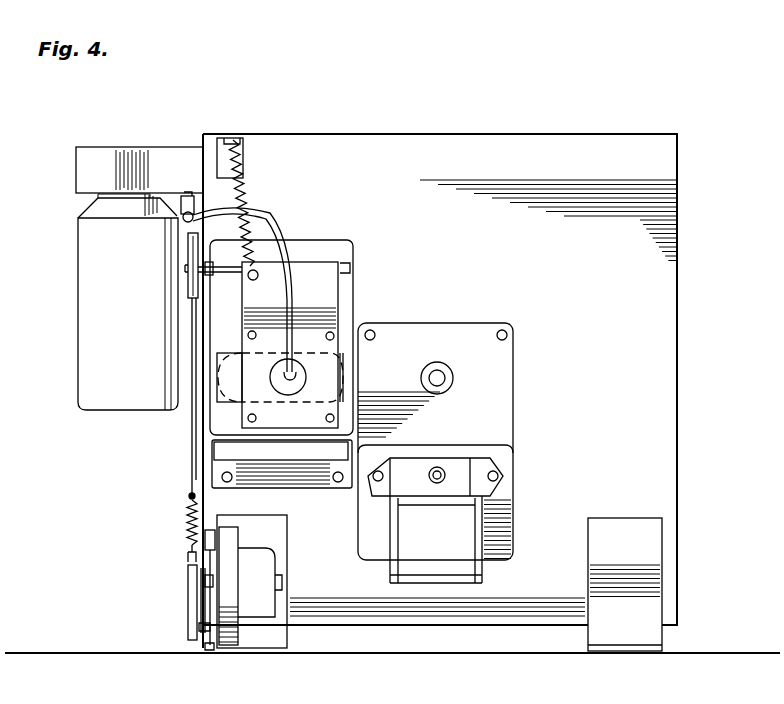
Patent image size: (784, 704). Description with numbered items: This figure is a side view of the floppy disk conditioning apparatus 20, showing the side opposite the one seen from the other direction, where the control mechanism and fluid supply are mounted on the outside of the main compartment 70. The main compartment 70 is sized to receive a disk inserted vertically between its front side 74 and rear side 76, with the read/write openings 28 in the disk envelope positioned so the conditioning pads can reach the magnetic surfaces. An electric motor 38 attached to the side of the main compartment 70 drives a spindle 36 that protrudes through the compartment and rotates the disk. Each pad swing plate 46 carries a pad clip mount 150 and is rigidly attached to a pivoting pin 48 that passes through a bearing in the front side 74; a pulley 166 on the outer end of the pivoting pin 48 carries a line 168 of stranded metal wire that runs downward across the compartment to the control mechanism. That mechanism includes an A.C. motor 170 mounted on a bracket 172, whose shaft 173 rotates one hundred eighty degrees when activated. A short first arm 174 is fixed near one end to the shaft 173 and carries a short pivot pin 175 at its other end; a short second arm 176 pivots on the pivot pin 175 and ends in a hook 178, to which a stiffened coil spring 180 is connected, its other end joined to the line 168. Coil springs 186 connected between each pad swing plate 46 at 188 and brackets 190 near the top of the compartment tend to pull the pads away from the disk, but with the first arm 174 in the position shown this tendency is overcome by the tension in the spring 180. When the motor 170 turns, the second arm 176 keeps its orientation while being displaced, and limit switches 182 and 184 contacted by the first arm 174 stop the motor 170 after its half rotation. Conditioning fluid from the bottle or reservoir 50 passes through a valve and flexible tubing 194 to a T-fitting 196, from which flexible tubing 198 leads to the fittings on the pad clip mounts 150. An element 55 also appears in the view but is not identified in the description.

The apparatus 20 is at (608, 108).
The read/write openings 28 is at (345, 365).
The spindle 36 is at (440, 365).
The electric motor 38 is at (515, 378).
The pad swing plate 46 is at (323, 312).
The pivoting pin 48 is at (185, 268).
The bottle or reservoir 50 is at (96, 327).
The bracket 55 is at (214, 462).
The main compartment 70 is at (678, 386).
The front side 74 is at (201, 142).
The rear side 76 is at (677, 478).
The pad clip mount 150 is at (228, 390).
The pulley 166 is at (188, 246).
The line 168 is at (192, 452).
The A.C. motor 170 is at (257, 550).
The bracket 172 is at (243, 650).
The shaft 173 is at (213, 580).
The short first arm 174 is at (201, 604).
The short pivot pin 175 is at (200, 627).
The short second arm 176 is at (188, 573).
The hook 178 is at (186, 558).
The stiffened coil spring 180 is at (188, 520).
The limit switch 182 is at (210, 522).
The limit switch 184 is at (208, 650).
The coil spring 186 is at (242, 196).
The connection point on pad swing plate 188 is at (258, 278).
The bracket 190 is at (241, 150).
The flexible tubing 194 is at (180, 200).
The T-fitting 196 is at (165, 208).
The flexible tubing 198 is at (300, 297).